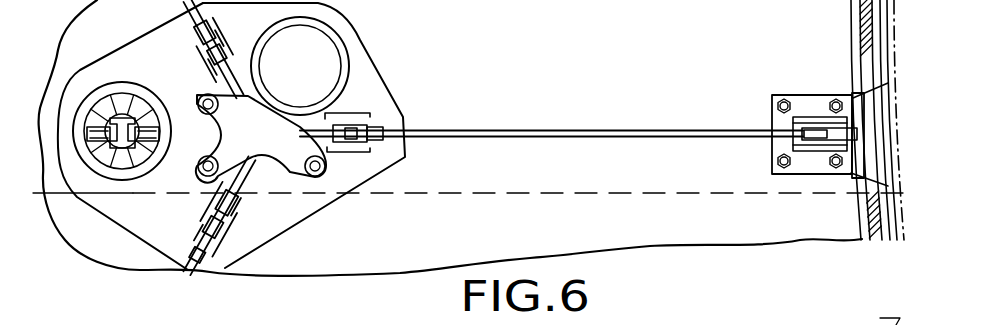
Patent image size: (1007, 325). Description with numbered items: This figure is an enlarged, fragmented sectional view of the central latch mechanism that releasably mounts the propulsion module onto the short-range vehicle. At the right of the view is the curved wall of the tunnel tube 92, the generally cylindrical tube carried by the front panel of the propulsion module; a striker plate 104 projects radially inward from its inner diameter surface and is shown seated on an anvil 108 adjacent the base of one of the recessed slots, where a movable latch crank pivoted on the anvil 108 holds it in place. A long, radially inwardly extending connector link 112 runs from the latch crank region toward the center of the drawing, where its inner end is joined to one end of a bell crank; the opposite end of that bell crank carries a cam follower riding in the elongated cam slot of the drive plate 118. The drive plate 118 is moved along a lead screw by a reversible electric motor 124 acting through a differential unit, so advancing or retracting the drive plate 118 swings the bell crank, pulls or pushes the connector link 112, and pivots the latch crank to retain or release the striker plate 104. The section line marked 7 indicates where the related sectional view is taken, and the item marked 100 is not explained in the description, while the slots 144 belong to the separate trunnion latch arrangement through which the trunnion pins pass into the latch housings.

The section line 7- 7 is at (70, 193).
The tunnel tube 92 is at (862, 324).
The mounting block 100 is at (833, 126).
The striker plates 104 is at (850, 97).
The anvils 108 is at (808, 118).
The connector links 112 is at (190, 276).
The drive plate 118 is at (250, 163).
The reversible electric motor 124 is at (333, 53).
The slots 144 is at (370, 125).